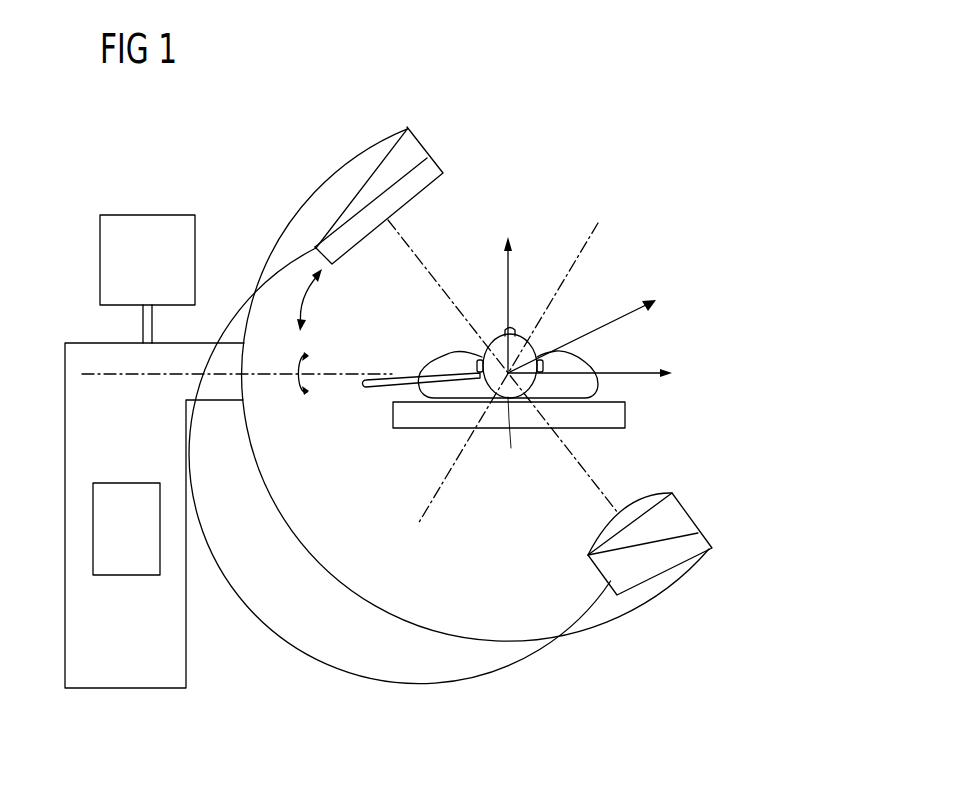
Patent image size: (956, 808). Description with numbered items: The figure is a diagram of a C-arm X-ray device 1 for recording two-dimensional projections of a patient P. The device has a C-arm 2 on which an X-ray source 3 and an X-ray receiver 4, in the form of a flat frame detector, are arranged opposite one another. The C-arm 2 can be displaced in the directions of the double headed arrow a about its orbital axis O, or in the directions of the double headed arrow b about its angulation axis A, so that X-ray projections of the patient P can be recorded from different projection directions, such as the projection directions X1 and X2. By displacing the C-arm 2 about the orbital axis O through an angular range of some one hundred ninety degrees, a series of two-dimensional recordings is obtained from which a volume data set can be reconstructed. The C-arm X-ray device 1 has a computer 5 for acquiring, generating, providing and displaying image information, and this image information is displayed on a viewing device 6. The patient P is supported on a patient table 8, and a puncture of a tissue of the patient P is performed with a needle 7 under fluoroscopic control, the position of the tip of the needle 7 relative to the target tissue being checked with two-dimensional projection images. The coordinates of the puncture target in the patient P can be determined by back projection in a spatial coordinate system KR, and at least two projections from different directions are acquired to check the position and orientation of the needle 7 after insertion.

The C-arm X-ray device 1 is at (749, 239).
The C-arm 2 is at (455, 622).
The X-ray source 3 is at (674, 516).
The X-ray receiver 4 is at (430, 172).
The computer 5 is at (147, 540).
The viewing device 6 is at (130, 226).
The needle 7 is at (397, 376).
The patient table 8 is at (615, 412).
The angulation axis A is at (203, 374).
The double headed arrow a is at (306, 297).
The double headed arrow b is at (308, 377).
The patient P is at (575, 367).
The spatial coordinate system KR is at (525, 342).
The projection direction X1 is at (523, 373).
The projection direction X2 is at (503, 366).
The orbital axis O is at (508, 427).